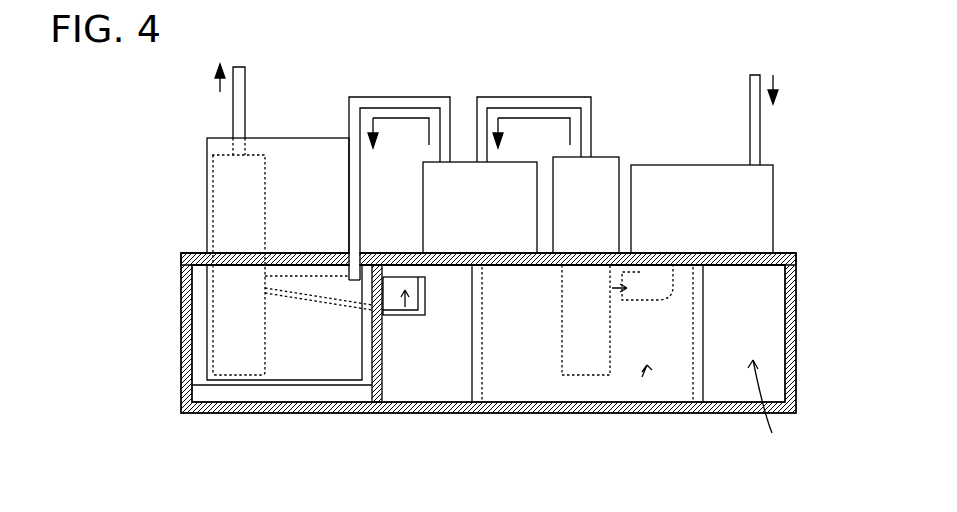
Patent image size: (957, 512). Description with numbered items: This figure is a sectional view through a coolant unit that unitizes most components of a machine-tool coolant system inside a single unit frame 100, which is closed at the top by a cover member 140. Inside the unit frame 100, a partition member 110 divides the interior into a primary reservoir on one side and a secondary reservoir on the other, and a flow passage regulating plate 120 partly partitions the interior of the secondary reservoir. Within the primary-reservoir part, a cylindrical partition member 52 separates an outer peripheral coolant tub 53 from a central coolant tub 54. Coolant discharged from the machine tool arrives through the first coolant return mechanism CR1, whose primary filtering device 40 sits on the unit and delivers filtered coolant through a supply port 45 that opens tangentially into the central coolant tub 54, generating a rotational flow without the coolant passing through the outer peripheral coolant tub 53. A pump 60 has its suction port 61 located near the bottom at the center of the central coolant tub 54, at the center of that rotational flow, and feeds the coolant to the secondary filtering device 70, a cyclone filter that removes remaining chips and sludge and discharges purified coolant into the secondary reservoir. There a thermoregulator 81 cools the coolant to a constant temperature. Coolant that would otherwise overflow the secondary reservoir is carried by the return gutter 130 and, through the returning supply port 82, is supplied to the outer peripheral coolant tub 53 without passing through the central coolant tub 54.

The unit frame 100 is at (181, 326).
The cover member 140 is at (197, 253).
The flow passage regulating plate 120 is at (217, 385).
The partition member 110 is at (383, 387).
The thermoregulator 81 is at (207, 147).
The secondary filtering device 70 is at (457, 162).
The pump 60 is at (602, 157).
The primary filtering device 40 is at (703, 165).
The first coolant return mechanism CR1 is at (785, 132).
The return gutter 130 is at (395, 277).
The returning supply port 82 is at (405, 308).
The suction port 61 is at (570, 378).
The supply port 45 is at (612, 289).
The central coolant tub 54 is at (642, 377).
The partition member 52 is at (703, 375).
The outer peripheral coolant tub 53 is at (766, 414).